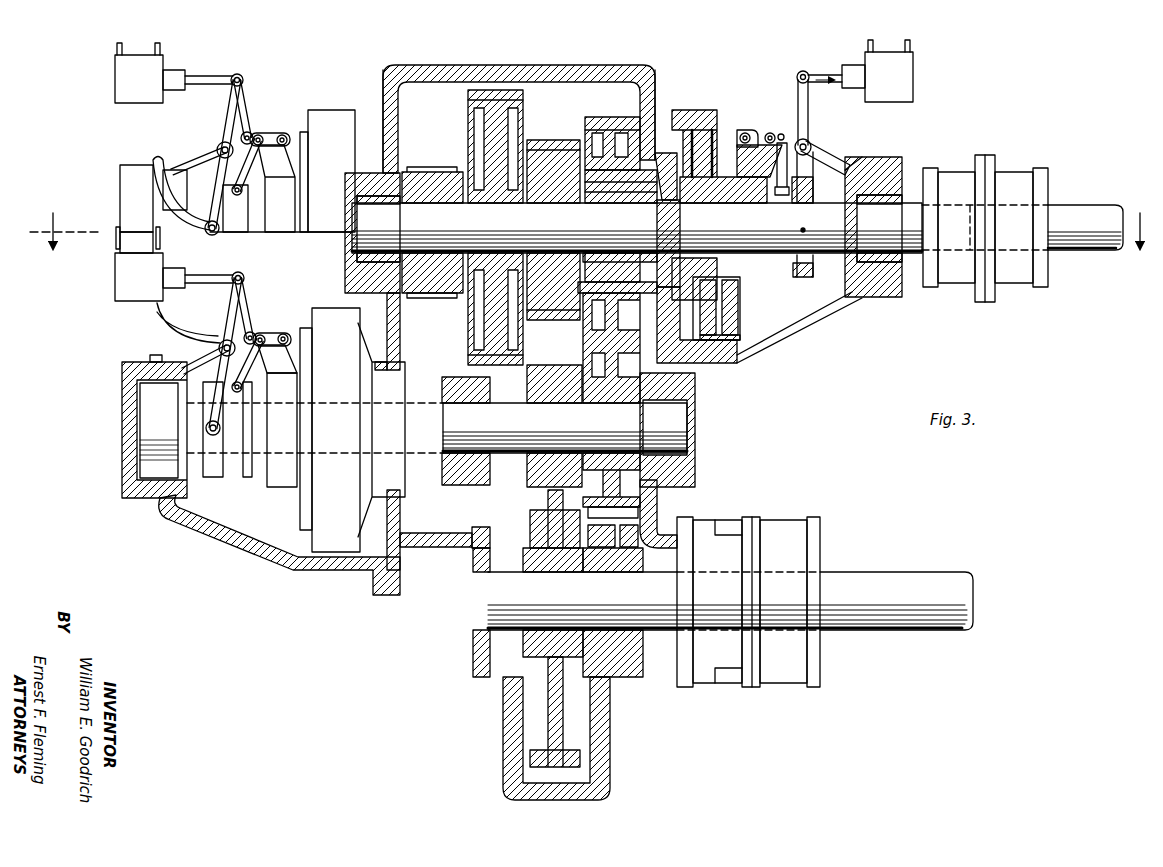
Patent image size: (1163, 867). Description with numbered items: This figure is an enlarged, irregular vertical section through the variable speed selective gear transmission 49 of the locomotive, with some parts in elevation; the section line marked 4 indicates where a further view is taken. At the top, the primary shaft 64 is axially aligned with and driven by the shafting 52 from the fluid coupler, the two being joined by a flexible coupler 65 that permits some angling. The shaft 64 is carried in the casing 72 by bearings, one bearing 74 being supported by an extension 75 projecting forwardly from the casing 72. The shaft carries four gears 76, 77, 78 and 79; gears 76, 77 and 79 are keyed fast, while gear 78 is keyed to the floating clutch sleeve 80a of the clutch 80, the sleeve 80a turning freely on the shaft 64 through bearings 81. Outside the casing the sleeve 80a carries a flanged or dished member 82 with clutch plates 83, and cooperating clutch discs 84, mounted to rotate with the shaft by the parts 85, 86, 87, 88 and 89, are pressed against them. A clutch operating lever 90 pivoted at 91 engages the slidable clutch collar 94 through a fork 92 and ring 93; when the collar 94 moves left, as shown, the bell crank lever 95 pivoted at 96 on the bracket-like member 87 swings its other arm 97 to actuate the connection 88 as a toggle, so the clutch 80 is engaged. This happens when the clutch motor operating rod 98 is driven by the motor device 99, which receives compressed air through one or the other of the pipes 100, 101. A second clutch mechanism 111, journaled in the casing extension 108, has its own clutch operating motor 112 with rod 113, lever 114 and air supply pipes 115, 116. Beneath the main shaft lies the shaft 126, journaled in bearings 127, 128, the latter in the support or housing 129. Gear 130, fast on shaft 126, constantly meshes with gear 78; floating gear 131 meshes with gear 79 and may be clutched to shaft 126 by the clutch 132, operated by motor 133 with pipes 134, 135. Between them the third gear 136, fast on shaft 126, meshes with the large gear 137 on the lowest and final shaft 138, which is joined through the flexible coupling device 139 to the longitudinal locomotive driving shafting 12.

The section line 4 is at (592, 228).
The shafting 12 is at (901, 571).
The variable speed selective gear transmission 49 is at (496, 317).
The shafting 52 is at (1080, 204).
The primary shaft 64 is at (350, 222).
The coupler 65 is at (986, 162).
The casing 72 is at (656, 80).
The bearing 74 is at (888, 290).
The extension 75 is at (350, 268).
The gear 76 is at (421, 170).
The gear 77 is at (545, 147).
The gear 78 is at (604, 125).
The gear 79 is at (478, 108).
The clutch 80 is at (699, 112).
The clutch sleeve 80a is at (590, 197).
The bearings 81 is at (618, 250).
The flanged or dished member 82 is at (707, 352).
The clutch plates 83 is at (720, 338).
The clutch plates or discs 84 is at (740, 320).
The part 85 is at (746, 282).
The part 86 is at (775, 286).
The bracket-like member 87 is at (770, 132).
The connection 88 is at (748, 132).
The part 89 is at (738, 128).
The clutch operating lever 90 is at (809, 110).
The pivot 91 is at (810, 143).
The fork 92 is at (809, 215).
The ring 93 is at (812, 271).
The clutch collar 94 is at (806, 280).
The bell crank lever 95 is at (782, 163).
The pivot 96 is at (800, 72).
The arm 97 is at (781, 134).
The clutch motor operating rod 98 is at (822, 74).
The motor device 99 is at (897, 100).
The pipe 100 is at (873, 43).
The pipe 101 is at (910, 45).
The extension 108 is at (230, 341).
The clutch mechanism 111 is at (318, 128).
The clutch operating motor 112 is at (123, 93).
The rod 113 is at (236, 74).
The lever 114 is at (228, 127).
The air supply pipe 115 is at (117, 48).
The air supply pipe 116 is at (160, 47).
The shaft 126 is at (690, 426).
The bearing 127 is at (696, 462).
The bearing 128 is at (140, 440).
The support or housing 129 is at (245, 562).
The gear 130 is at (665, 505).
The floating gear 131 is at (475, 493).
The clutch 132 is at (318, 316).
The operating motor 133 is at (135, 285).
The pipe 134 is at (116, 240).
The pipe 135 is at (161, 241).
The third gear 136 is at (547, 366).
The large gear 137 is at (540, 728).
The final shaft 138 is at (641, 668).
The coupling device 139 is at (748, 690).